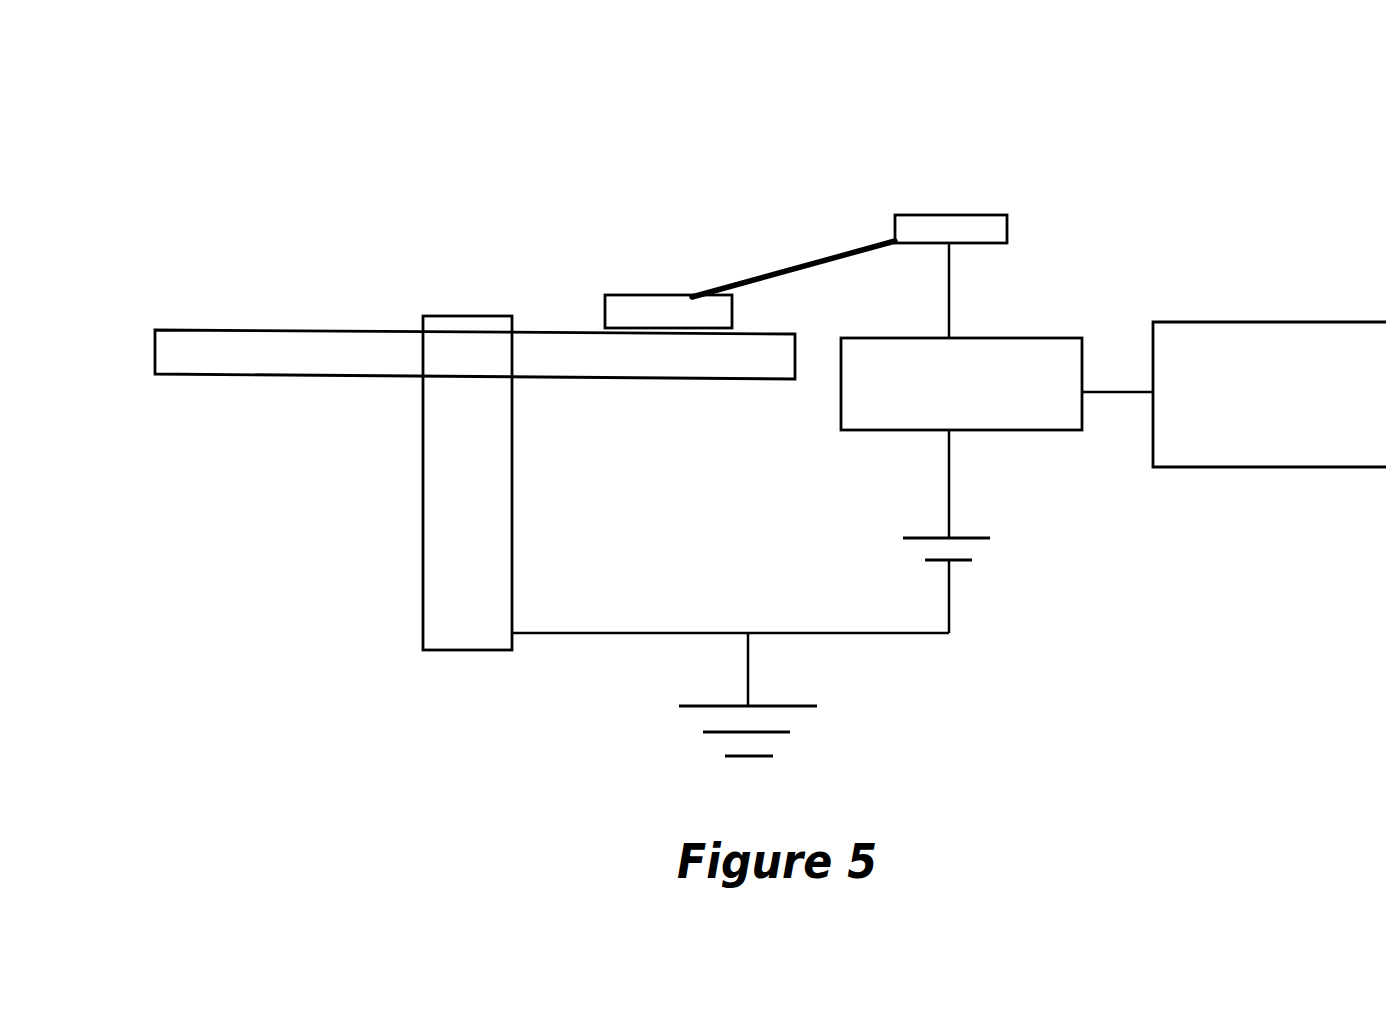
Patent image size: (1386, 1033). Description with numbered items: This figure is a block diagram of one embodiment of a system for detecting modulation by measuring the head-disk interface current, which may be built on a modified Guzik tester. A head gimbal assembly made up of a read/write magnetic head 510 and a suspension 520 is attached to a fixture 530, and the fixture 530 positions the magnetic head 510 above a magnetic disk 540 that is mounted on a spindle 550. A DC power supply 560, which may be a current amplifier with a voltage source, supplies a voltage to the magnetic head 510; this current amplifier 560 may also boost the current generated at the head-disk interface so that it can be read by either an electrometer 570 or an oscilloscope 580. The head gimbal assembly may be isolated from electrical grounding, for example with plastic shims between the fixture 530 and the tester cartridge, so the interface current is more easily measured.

The read/write magnetic head 510 is at (632, 219).
The suspension 520 is at (786, 179).
The fixture 530 is at (905, 134).
The magnetic disk 540 is at (416, 269).
The spindle 550 is at (364, 483).
The DC power supply 560 is at (1016, 574).
The electrometer 570 is at (961, 366).
The oscilloscope 580 is at (1269, 379).